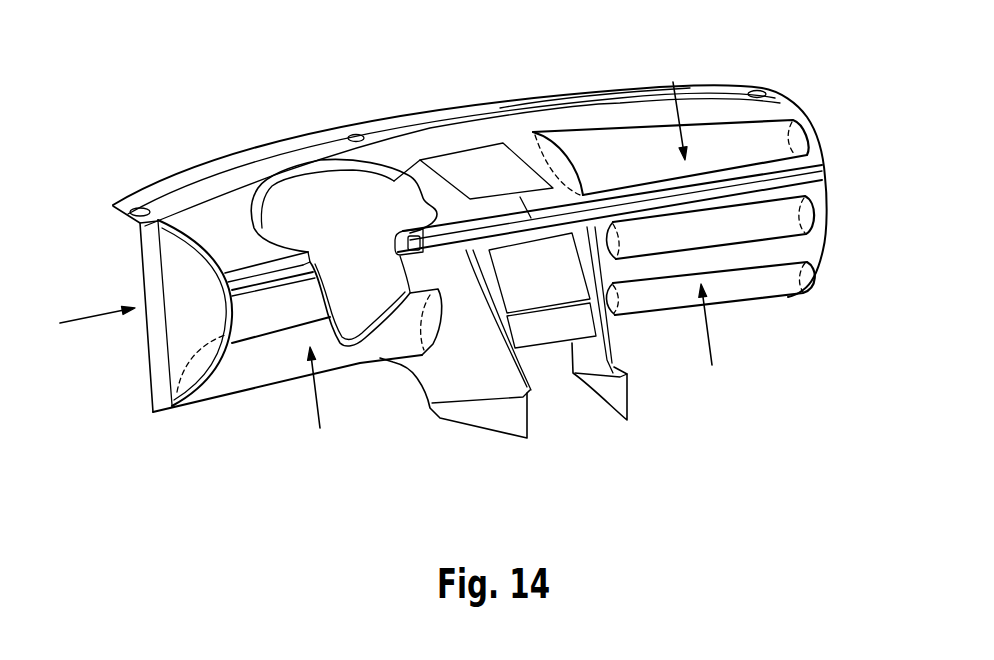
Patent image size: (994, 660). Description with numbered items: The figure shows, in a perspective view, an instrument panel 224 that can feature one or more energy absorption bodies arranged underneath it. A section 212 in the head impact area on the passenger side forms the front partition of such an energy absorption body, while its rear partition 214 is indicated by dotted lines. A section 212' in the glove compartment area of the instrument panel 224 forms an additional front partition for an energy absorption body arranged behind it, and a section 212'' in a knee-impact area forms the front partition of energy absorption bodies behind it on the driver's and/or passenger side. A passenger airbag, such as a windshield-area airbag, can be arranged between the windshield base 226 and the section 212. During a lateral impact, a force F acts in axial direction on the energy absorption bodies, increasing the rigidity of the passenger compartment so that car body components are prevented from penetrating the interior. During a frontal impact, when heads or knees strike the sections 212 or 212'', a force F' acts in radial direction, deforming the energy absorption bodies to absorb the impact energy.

The instrument panel 224 is at (191, 120).
The windshield base 226 is at (546, 100).
The section 212 is at (671, 115).
The section 212' is at (757, 224).
The section 212'' is at (520, 360).
The rear partition 214 is at (527, 140).
The force F is at (97, 333).
The force F' is at (547, 238).